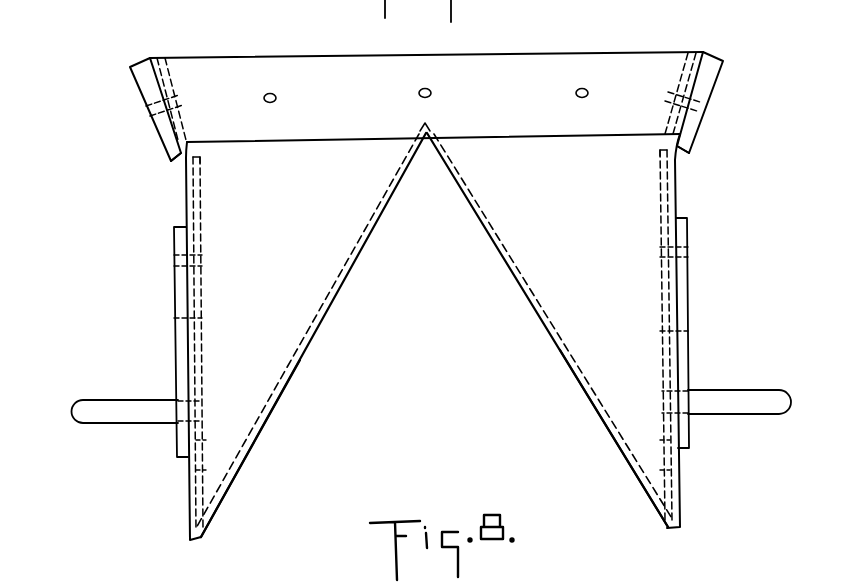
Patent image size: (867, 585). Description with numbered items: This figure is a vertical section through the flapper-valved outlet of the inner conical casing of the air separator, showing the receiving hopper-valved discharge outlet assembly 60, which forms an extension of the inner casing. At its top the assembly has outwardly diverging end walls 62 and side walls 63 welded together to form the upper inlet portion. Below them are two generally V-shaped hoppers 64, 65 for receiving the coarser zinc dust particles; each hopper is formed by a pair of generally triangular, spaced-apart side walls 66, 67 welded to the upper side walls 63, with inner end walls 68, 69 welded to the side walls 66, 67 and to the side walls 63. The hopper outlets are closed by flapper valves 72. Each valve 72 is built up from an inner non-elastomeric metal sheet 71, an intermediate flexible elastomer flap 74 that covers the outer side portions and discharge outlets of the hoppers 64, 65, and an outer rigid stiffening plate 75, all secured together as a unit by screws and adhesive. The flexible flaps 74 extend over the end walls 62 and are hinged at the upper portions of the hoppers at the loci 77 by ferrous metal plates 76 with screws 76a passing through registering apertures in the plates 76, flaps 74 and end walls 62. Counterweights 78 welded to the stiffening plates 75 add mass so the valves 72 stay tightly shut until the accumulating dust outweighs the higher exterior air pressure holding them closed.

The receiving hopper-valved discharge outlet assembly 60 is at (677, 200).
The end wall 62 is at (168, 73).
The side wall 63 is at (335, 61).
The hopper 64 is at (283, 310).
The hopper 65 is at (573, 308).
The side wall 66 is at (323, 256).
The side wall 67 is at (522, 238).
The inner end wall 68 is at (298, 367).
The inner end wall 69 is at (578, 373).
The non-elastomeric sheet 71 is at (205, 449).
The flapper valve 72 is at (173, 278).
The flexible elastomer flap 74 is at (182, 318).
The outer stiffening plate 75 is at (181, 357).
The ferrous metal plate 76 is at (134, 80).
The screw 76a is at (153, 110).
The hinge locus 77 is at (189, 137).
The counterweight 78 is at (80, 411).